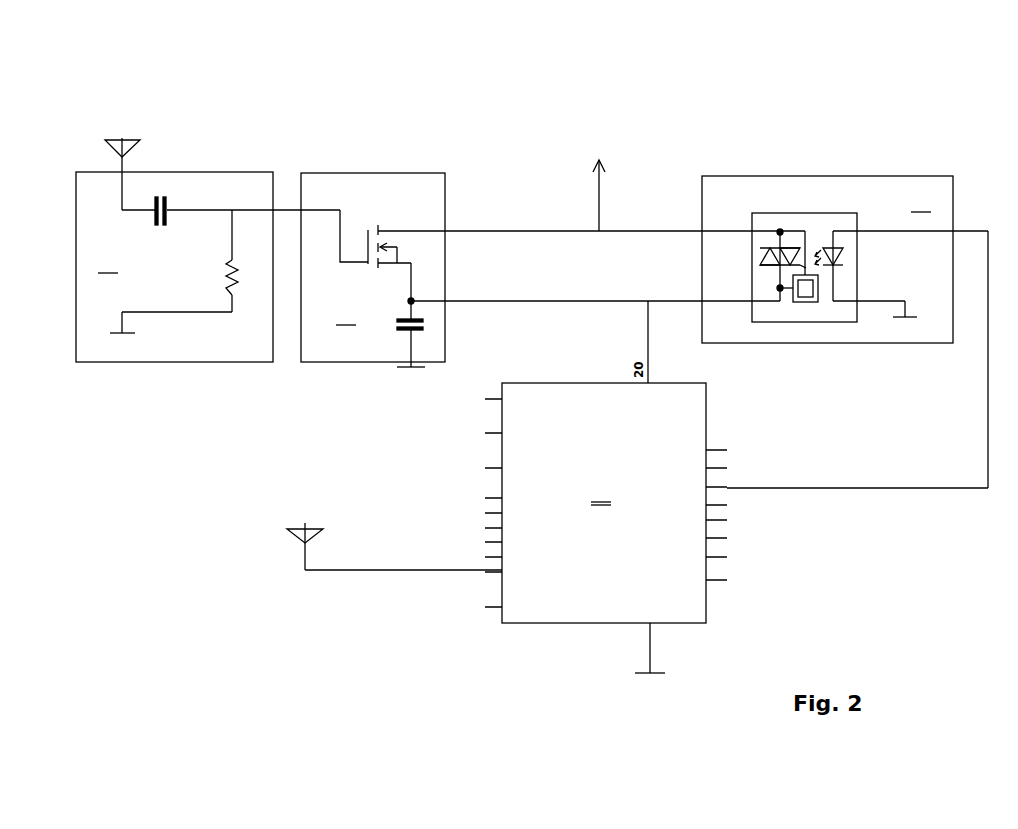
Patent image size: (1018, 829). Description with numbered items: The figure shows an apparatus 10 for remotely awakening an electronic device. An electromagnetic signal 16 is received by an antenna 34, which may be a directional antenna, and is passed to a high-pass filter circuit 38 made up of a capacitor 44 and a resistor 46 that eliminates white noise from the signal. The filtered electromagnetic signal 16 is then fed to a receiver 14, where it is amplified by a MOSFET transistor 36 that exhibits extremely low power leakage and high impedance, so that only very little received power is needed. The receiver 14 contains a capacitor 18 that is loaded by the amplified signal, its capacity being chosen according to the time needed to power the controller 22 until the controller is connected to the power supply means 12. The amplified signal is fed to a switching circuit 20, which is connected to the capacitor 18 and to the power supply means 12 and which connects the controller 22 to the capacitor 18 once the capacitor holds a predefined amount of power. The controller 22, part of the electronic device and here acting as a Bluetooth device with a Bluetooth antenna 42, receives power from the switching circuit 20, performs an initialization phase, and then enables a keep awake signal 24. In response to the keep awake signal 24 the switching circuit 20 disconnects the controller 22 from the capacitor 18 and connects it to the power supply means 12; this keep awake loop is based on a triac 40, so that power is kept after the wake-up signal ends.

The apparatus 10 is at (913, 129).
The power supply means 12 is at (603, 164).
The receiver 14 is at (373, 267).
The electromagnetic signal 16 is at (205, 210).
The capacitor 18 is at (425, 325).
The switching circuit 20 is at (845, 259).
The controller 22 is at (606, 531).
The keep awake signal 24 is at (845, 492).
The antenna 34 is at (130, 152).
The MOSFET transistor 36 is at (378, 225).
The high-pass filter circuit 38 is at (174, 267).
The triac 40 is at (800, 213).
The Bluetooth antenna 42 is at (395, 573).
The capacitor 44 is at (163, 226).
The resistor 46 is at (235, 296).